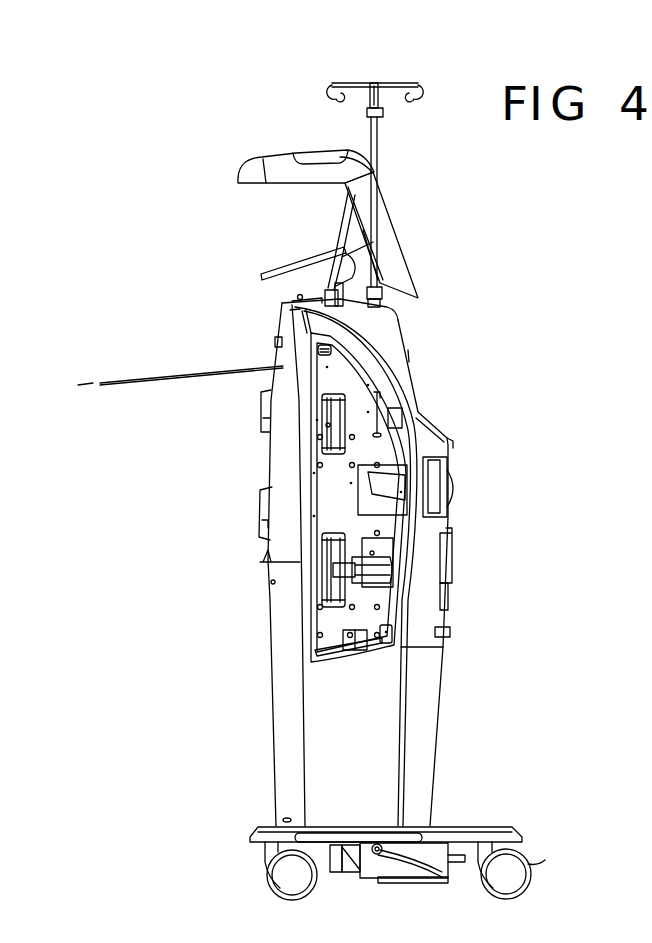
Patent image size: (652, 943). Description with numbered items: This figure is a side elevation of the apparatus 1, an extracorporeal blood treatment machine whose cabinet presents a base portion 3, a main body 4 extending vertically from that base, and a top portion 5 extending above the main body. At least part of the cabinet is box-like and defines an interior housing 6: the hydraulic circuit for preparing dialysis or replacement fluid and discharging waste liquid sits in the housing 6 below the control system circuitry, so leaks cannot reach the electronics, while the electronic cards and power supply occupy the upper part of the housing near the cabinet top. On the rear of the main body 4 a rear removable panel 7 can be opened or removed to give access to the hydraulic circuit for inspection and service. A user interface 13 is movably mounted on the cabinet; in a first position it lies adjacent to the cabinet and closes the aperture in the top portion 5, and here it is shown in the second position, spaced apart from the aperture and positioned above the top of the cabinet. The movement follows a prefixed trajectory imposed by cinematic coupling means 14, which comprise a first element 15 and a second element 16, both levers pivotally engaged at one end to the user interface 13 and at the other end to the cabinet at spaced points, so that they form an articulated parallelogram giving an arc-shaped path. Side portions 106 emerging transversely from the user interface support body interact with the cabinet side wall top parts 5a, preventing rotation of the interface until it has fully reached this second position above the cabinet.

The apparatus 1 is at (190, 549).
The base portion 3 is at (440, 827).
The main body 4 is at (450, 527).
The top portion 5 is at (419, 403).
The cabinet side wall top parts 5a is at (398, 357).
The housing 6 is at (420, 331).
The rear removable panel 7 is at (276, 751).
The user interface 13 is at (394, 189).
The cinematic coupling means 14 is at (290, 241).
The first element 15 is at (348, 238).
The second element 16 is at (335, 267).
The side portions 106 is at (393, 243).